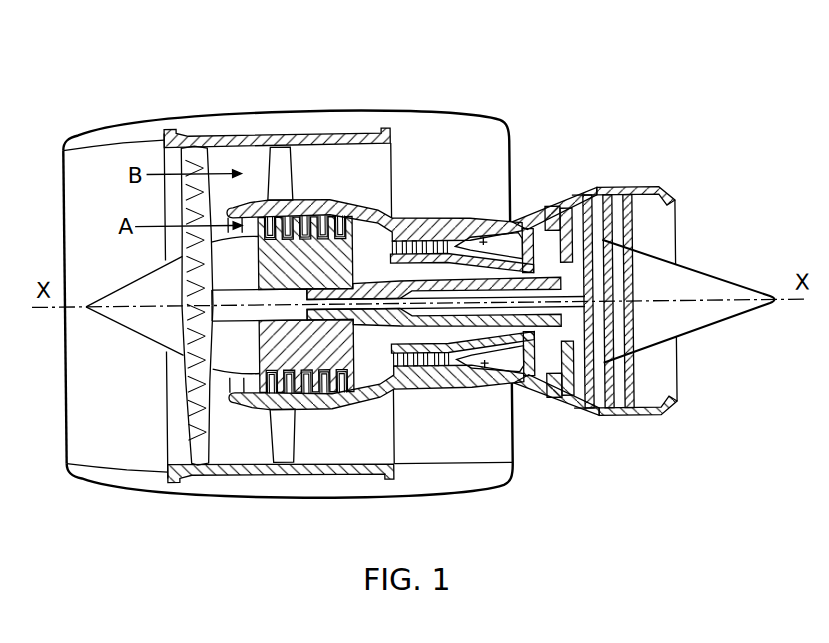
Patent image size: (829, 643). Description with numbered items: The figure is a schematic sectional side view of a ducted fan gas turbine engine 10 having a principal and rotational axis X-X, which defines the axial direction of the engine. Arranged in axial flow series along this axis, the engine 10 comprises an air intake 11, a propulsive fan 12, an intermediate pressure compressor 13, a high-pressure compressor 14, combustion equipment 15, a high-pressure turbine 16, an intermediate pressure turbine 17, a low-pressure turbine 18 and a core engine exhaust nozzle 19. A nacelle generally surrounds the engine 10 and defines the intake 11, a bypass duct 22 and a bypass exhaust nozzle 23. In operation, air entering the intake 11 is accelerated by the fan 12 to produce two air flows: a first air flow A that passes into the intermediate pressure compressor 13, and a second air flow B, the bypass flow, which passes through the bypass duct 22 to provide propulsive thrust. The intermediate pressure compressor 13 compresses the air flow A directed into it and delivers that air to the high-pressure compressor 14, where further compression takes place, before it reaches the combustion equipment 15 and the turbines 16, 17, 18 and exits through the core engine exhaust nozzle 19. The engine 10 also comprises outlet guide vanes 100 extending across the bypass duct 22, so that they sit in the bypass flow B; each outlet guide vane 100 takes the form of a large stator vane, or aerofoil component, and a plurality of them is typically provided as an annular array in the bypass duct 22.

The ducted fan gas turbine engine 10 is at (111, 81).
The air intake 11 is at (109, 140).
The propulsive fan 12 is at (194, 425).
The intermediate pressure compressor 13 is at (321, 379).
The high-pressure compressor 14 is at (414, 243).
The combustion equipment 15 is at (463, 373).
The high-pressure turbine 16 is at (481, 366).
The intermediate pressure turbine 17 is at (564, 214).
The low-pressure turbine 18 is at (575, 406).
The core engine exhaust nozzle 19 is at (664, 193).
The bypass duct 22 is at (468, 174).
The bypass exhaust nozzle 23 is at (508, 124).
The outlet guide vane 100 is at (282, 153).